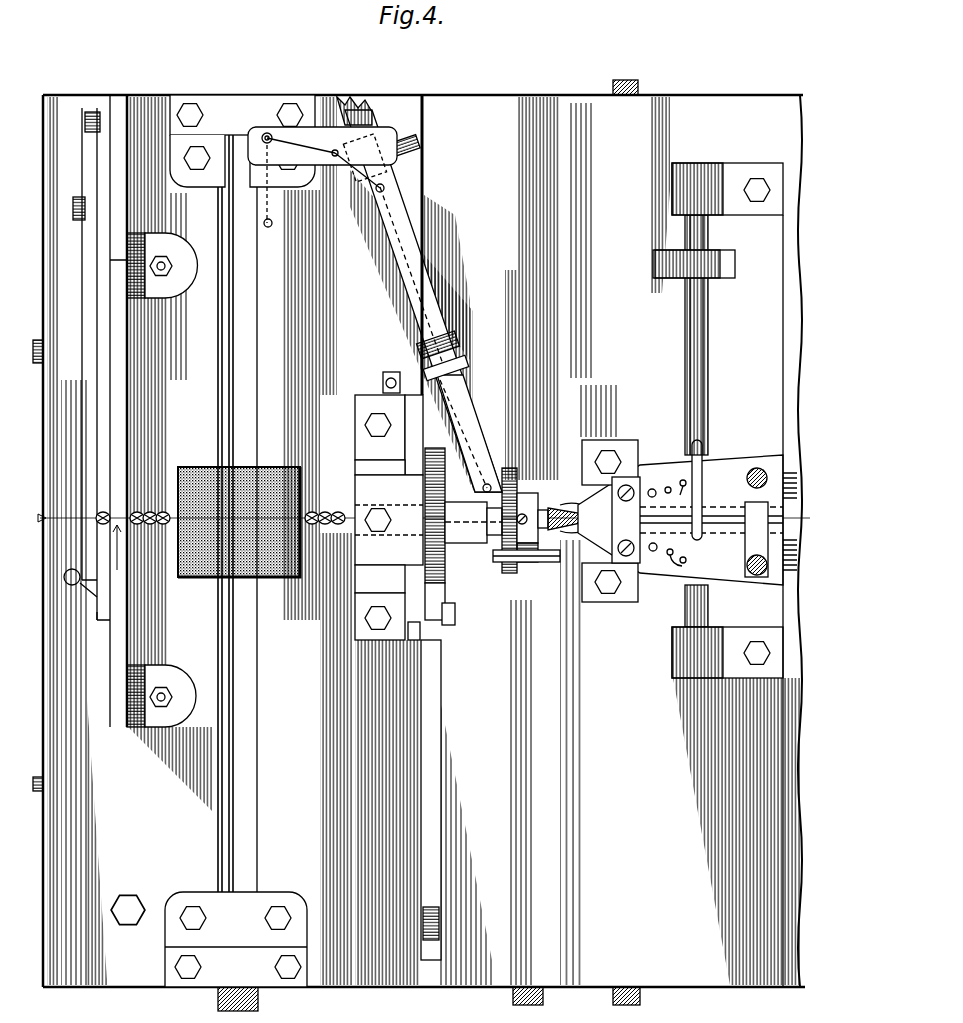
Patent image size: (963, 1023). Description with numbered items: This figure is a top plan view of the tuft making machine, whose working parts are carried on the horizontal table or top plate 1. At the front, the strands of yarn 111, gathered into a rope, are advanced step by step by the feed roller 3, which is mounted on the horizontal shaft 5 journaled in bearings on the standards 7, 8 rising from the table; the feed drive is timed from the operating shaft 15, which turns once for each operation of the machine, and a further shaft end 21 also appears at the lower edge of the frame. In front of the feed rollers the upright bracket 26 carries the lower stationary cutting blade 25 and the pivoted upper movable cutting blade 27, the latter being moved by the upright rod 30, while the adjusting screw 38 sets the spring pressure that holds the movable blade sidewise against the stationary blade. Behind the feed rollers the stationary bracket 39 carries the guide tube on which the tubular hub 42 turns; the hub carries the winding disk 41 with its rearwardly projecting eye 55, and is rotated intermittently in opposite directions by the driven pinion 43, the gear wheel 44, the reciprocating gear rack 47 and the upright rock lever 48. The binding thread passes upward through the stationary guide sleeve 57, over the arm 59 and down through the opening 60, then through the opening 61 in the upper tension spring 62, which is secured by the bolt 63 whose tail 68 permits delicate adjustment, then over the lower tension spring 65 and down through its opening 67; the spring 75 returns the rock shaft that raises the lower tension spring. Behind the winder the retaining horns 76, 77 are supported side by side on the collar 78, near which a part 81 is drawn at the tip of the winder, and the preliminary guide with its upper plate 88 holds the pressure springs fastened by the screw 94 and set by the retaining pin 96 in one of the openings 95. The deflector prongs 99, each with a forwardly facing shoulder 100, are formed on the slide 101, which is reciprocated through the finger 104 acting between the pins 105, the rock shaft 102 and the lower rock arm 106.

The table or top plate 1 is at (604, 141).
The feed roller 3 is at (216, 467).
The shaft 5 is at (268, 705).
The standard 7 is at (242, 141).
The standard 8 is at (209, 939).
The operating shaft 15 is at (514, 997).
The bolt 21 is at (640, 1003).
The lower stationary cutting blade 25 is at (97, 625).
The upright bracket 26 is at (115, 728).
The upper movable cutting blade 27 is at (90, 413).
The upright rod 30 is at (72, 586).
The adjusting screw 38 is at (44, 783).
The stationary bracket 39 is at (389, 506).
The winding disk 41 is at (512, 470).
The tubular hub 42 is at (452, 542).
The driven pinion 43 is at (410, 530).
The gear wheel 44 is at (447, 603).
The gear rack 47 is at (412, 640).
The upright rock lever 48 is at (433, 812).
The eye 55 is at (528, 562).
The stationary guide sleeve 57 is at (266, 134).
The arm 59 is at (322, 154).
The opening 60 is at (305, 138).
The opening 61 is at (384, 189).
The upper tension spring 62 is at (410, 247).
The bolt 63 is at (407, 150).
The lower tension spring 65 is at (465, 402).
The opening 67 is at (488, 485).
The tail 68 is at (350, 97).
The spring 75 is at (443, 350).
The retaining horn 76 is at (540, 565).
The retaining horn 77 is at (543, 505).
The collar 78 is at (522, 545).
The nozzle 81 is at (560, 512).
The upper plate 88 is at (681, 520).
The upright screw or fastening 94 is at (752, 470).
The openings 95 is at (688, 527).
The retaining pin 96 is at (655, 522).
The prongs 99 is at (567, 512).
The shoulder 100 is at (607, 462).
The slide 101 is at (711, 520).
The rock shaft 102 is at (702, 322).
The finger 104 is at (697, 482).
The pins 105 is at (708, 533).
The lower rock arm 106 is at (722, 268).
The strands of yarn 111 is at (345, 510).